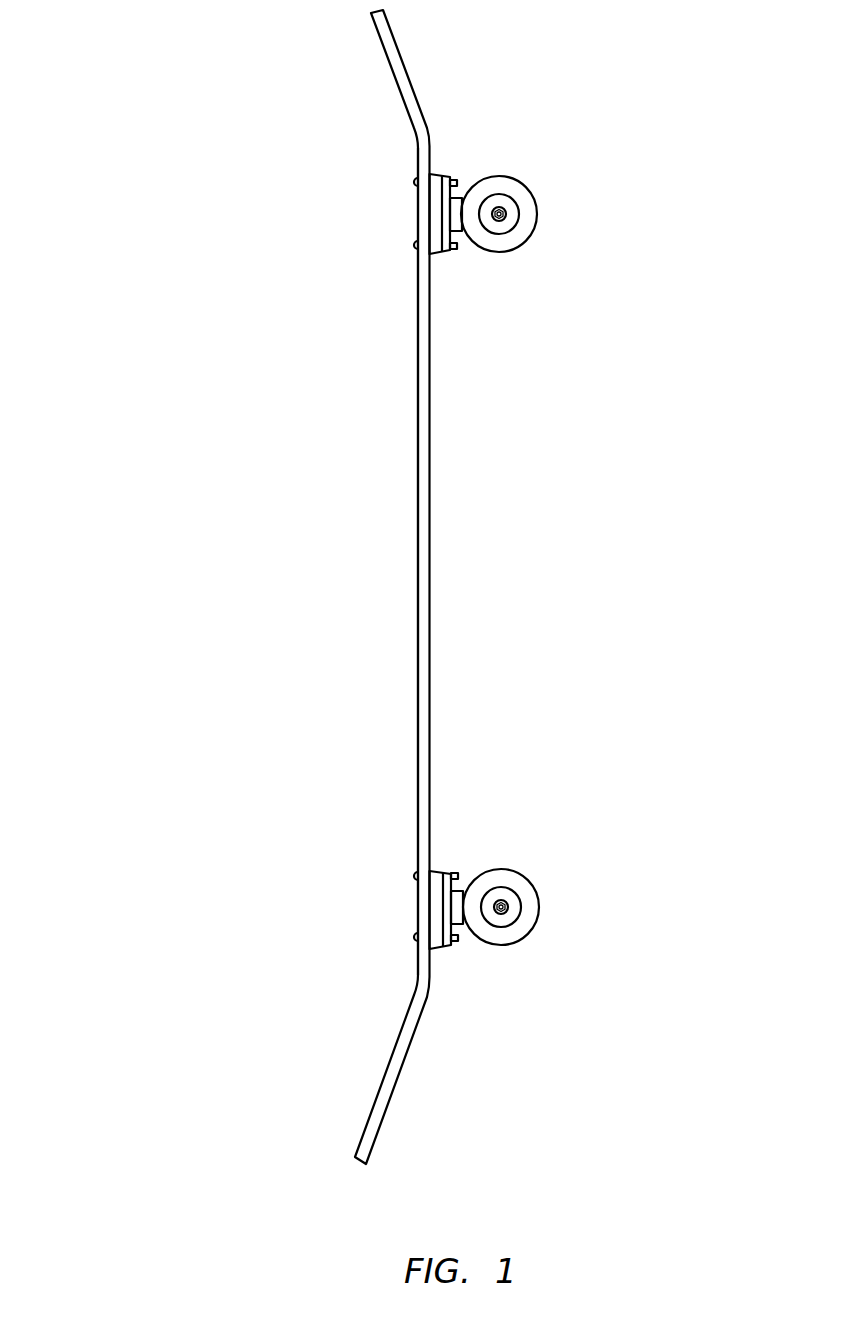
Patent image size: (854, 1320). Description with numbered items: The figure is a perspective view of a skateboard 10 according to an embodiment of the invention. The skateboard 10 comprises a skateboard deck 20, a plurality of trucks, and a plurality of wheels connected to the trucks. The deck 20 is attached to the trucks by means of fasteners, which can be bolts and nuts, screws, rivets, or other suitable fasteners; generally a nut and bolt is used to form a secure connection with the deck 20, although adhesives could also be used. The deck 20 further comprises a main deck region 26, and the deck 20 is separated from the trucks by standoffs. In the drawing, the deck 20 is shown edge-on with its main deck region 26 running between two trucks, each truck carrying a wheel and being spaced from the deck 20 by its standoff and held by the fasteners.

The skateboard 10 is at (164, 203).
The skateboard deck 20 is at (418, 394).
The main deck region 26 is at (418, 560).